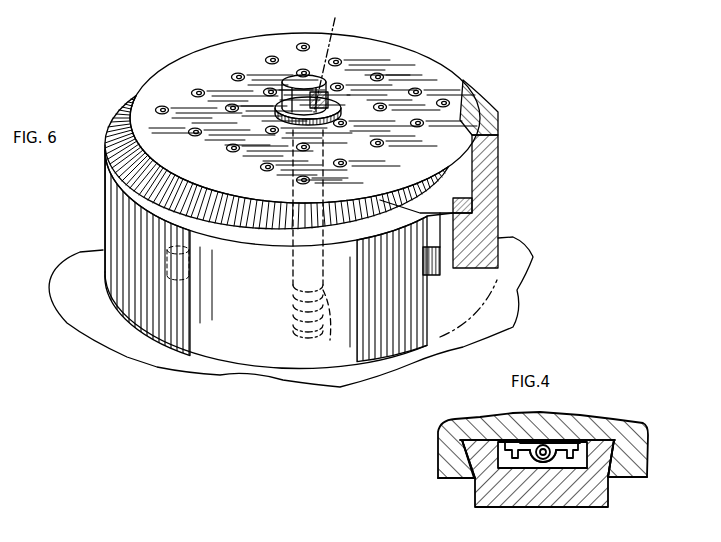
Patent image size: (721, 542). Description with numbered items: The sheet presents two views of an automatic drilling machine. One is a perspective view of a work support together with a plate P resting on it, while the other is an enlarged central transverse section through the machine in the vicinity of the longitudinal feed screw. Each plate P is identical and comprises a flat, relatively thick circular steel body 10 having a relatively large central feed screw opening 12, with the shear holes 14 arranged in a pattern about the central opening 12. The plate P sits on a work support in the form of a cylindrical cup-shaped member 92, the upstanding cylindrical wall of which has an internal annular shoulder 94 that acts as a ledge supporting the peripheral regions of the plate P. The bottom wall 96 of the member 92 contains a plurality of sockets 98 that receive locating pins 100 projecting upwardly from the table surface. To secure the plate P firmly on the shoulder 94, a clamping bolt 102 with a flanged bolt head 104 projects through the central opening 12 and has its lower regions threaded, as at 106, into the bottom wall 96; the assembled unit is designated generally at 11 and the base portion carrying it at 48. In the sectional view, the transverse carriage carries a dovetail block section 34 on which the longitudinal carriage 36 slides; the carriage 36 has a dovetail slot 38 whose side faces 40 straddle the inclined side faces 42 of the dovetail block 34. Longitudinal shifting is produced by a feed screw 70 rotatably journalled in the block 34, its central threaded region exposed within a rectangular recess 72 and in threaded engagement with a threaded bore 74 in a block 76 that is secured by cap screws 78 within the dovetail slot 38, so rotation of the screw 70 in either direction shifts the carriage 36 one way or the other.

In FIG. 6, the body 10 is at (462, 86).
In FIG. 6, the plate assembly 11 is at (297, 3).
In FIG. 6, the central feed screw opening 12 is at (336, 57).
In FIG. 6, the shear holes 14 is at (380, 75).
In FIG. 6, the plate P is at (436, 60).
In FIG. 6, the base 48 is at (260, 311).
In FIG. 6, the cup-shaped member 92 is at (486, 189).
In FIG. 6, the internal annular shoulder 94 is at (497, 113).
In FIG. 6, the bottom wall 96 is at (473, 206).
In FIG. 6, the sockets 98 is at (434, 276).
In FIG. 6, the locating pins 100 is at (455, 237).
In FIG. 6, the clamping bolt 102 is at (330, 340).
In FIG. 6, the flanged bolt head 104 is at (293, 78).
In FIG. 6, the threaded lower regions 106 is at (300, 336).
In FIG. 4, the dovetail block section 34 is at (507, 490).
In FIG. 4, the longitudinal carriage 36 is at (440, 443).
In FIG. 4, the dovetail slot 38 is at (482, 440).
In FIG. 4, the side faces 40 is at (463, 480).
In FIG. 4, the inclined side faces 42 is at (468, 453).
In FIG. 4, the feed screw 70 is at (545, 444).
In FIG. 4, the rectangular recess 72 is at (560, 473).
In FIG. 4, the threaded bore 74 is at (537, 460).
In FIG. 4, the block 76 is at (575, 443).
In FIG. 4, the cap screws 78 is at (562, 463).